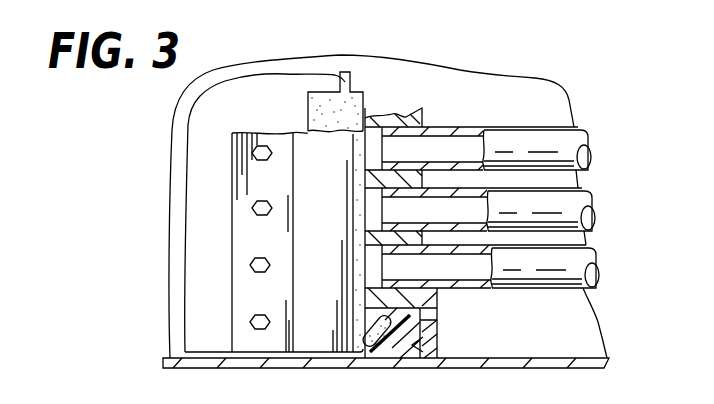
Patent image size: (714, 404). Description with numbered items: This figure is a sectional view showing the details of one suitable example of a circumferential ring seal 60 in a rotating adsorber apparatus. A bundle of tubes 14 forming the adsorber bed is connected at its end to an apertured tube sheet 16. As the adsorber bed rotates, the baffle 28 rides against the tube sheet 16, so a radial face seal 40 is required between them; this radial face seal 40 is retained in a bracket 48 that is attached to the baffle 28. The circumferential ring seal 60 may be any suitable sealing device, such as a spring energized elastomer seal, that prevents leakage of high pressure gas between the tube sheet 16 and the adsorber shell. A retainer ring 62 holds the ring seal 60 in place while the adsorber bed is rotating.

The tubes 14 is at (517, 134).
The tube sheet 16 is at (405, 117).
The baffle 28 is at (220, 337).
The radial face seal 40 is at (333, 100).
The bracket 48 is at (306, 150).
The circumferential ring seal 60 is at (383, 350).
The retainer ring 62 is at (433, 342).